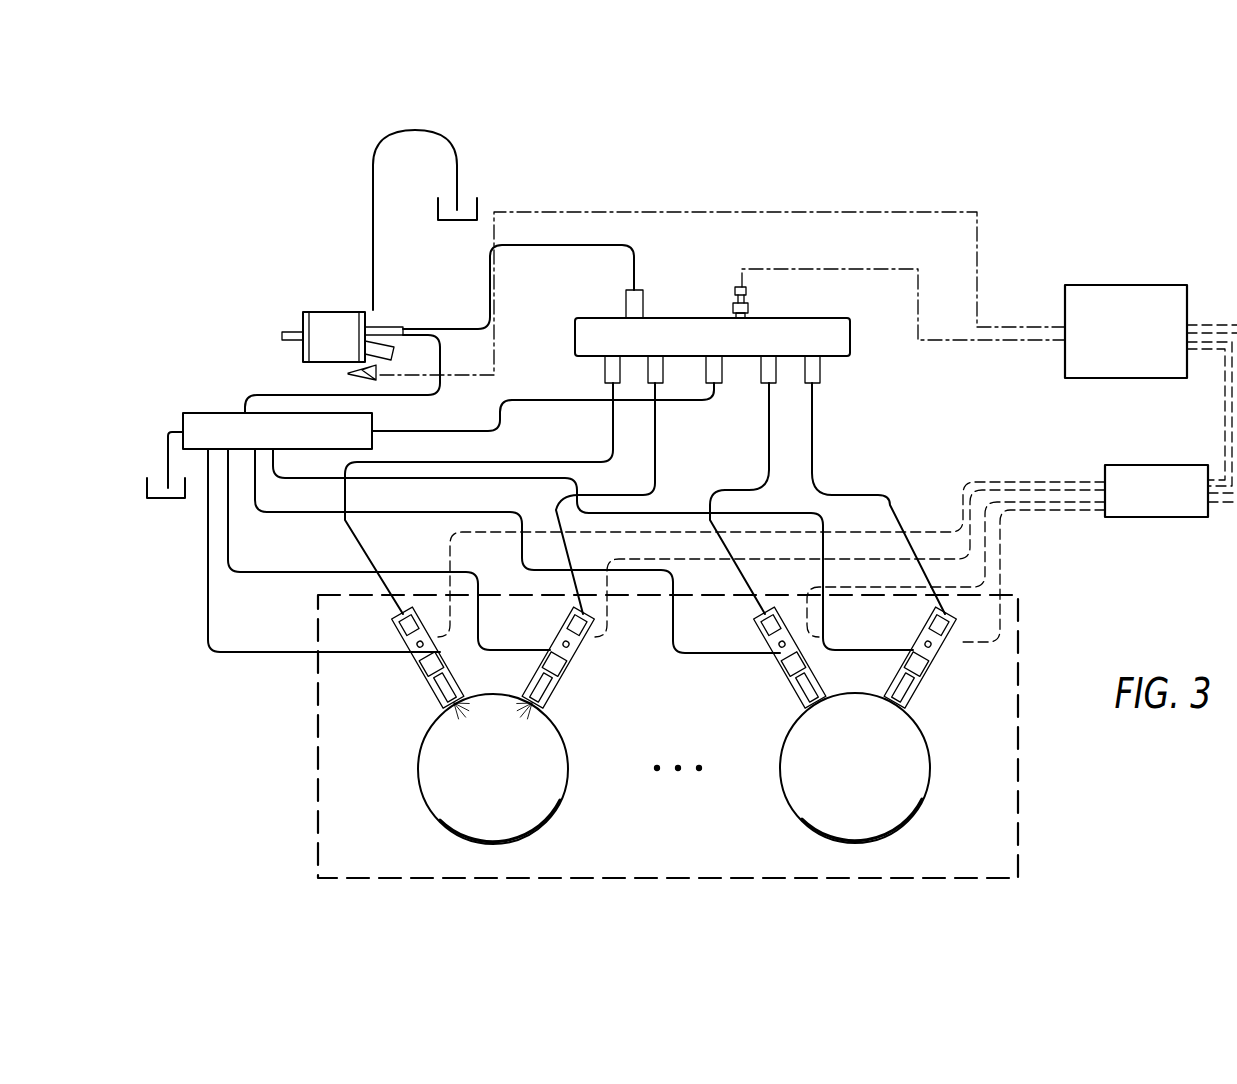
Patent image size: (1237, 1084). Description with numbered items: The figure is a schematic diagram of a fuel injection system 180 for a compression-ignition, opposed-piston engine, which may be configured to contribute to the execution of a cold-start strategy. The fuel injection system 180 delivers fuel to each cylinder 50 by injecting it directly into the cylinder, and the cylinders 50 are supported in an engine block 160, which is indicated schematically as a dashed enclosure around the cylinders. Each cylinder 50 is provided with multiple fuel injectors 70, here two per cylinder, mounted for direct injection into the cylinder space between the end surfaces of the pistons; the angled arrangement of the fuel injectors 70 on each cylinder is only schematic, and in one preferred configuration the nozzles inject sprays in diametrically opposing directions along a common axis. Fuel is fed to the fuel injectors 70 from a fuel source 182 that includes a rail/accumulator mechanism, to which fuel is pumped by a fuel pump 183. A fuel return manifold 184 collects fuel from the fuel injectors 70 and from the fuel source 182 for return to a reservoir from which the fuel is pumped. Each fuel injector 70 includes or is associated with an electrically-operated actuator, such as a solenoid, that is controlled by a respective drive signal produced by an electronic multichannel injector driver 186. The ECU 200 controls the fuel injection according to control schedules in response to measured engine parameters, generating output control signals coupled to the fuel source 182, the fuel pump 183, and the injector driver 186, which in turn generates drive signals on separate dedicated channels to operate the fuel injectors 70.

The cylinder 50 is at (568, 762).
The fuel injector 70 is at (432, 683).
The engine block 160 is at (1020, 822).
The fuel injection system 180 is at (949, 164).
The fuel source 182 is at (798, 318).
The fuel pump 183 is at (338, 312).
The fuel return manifold 184 is at (372, 426).
The injector driver 186 is at (1135, 517).
The ECU 200 is at (1118, 285).